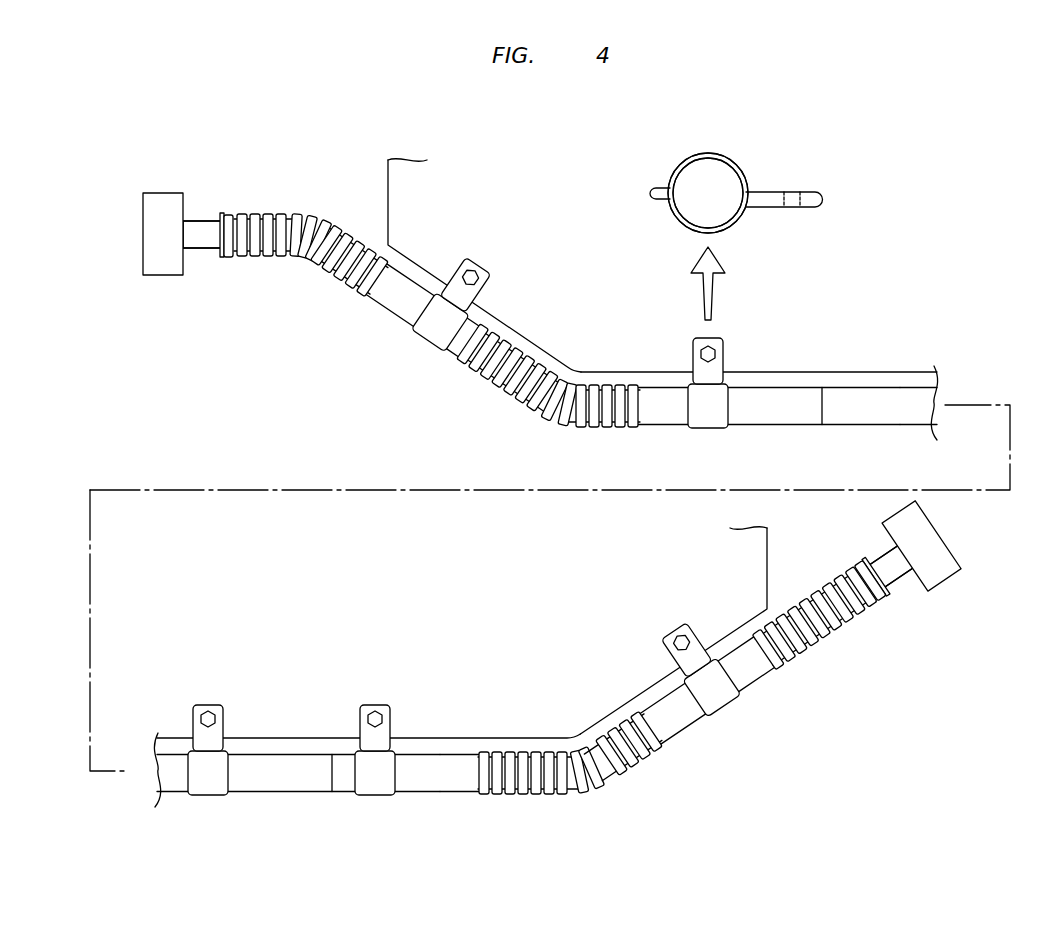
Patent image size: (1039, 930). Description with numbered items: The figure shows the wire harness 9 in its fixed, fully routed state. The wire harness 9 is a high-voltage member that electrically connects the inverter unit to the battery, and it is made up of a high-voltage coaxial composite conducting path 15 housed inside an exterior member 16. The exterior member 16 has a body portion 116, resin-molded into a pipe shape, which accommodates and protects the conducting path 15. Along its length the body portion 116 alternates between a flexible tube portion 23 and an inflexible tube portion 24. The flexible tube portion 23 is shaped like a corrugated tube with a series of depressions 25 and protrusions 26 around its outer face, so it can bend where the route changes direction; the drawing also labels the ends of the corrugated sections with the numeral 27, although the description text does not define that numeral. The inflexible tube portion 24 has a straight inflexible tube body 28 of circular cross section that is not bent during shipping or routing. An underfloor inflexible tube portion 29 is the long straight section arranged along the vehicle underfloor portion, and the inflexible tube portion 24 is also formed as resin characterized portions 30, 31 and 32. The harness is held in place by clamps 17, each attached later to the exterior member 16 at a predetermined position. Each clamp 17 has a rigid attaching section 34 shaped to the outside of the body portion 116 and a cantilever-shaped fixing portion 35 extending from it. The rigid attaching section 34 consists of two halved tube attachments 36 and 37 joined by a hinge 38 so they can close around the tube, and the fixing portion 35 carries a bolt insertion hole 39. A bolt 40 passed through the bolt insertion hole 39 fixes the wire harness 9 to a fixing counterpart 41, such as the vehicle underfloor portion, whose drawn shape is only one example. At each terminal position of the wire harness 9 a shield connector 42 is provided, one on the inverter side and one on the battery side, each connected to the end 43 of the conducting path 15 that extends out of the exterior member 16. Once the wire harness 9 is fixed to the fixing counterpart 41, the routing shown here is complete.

The wire harness 9 is at (397, 372).
The high-voltage coaxial composite conducting path 15 is at (207, 235).
The exterior member 16 is at (900, 326).
The clamp 17 is at (440, 347).
The flexible tube portion 23 is at (287, 212).
The inflexible tube portion 24 is at (377, 307).
The depression 25 is at (225, 258).
The protrusion 26 is at (234, 258).
The corrugation end portion 27 is at (303, 263).
The inflexible tube body 28 is at (485, 318).
The underfloor inflexible tube portion 29 is at (918, 417).
The resin characterized portion 30 is at (407, 307).
The resin characterized portion 31 is at (780, 417).
The resin characterized portion 32 is at (843, 417).
The rigid attaching section 34 is at (680, 160).
The fixing portion 35 is at (722, 370).
The tube attachment 36 is at (716, 151).
The tube attachment 37 is at (748, 221).
The hinge 38 is at (660, 188).
The bolt insertion hole 39 is at (803, 191).
The bolt 40 is at (470, 274).
The fixing counterpart 41 is at (387, 210).
The shield connector 42 is at (163, 271).
The end 43 is at (547, 371).
The body portion 116 is at (889, 403).